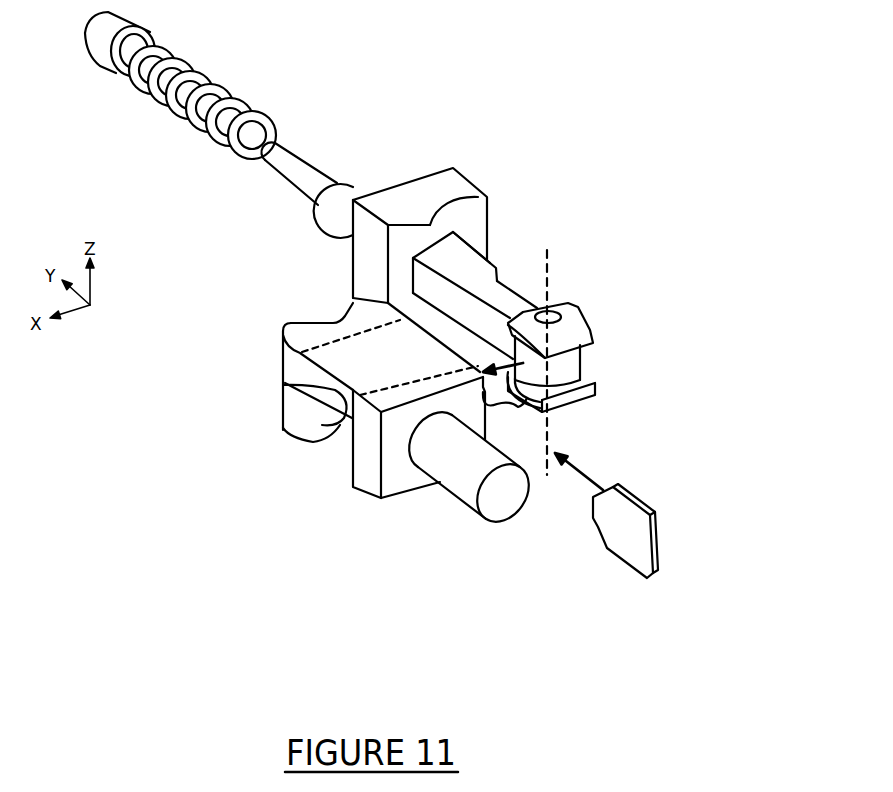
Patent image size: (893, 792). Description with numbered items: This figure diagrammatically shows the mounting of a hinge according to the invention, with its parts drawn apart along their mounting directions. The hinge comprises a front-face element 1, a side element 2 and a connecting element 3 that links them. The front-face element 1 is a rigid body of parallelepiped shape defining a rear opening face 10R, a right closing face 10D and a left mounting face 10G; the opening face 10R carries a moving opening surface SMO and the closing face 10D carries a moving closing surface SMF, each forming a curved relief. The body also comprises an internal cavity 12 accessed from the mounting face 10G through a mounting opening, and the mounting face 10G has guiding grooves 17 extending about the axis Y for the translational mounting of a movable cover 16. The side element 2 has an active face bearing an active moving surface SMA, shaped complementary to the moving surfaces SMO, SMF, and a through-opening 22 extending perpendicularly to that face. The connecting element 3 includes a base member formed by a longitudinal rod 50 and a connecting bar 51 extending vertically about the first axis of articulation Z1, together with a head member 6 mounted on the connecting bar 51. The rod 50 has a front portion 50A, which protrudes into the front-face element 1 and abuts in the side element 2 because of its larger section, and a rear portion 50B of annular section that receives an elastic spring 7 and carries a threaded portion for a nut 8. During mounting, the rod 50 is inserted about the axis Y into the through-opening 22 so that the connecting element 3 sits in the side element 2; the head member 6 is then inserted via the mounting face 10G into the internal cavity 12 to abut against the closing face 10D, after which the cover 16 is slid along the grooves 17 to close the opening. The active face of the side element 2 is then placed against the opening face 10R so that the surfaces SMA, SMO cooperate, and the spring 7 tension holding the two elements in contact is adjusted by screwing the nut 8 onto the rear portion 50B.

The front-face element 1 is at (410, 490).
The side element 2 is at (328, 253).
The connecting element 3 is at (668, 383).
The head member 6 is at (568, 306).
The elastic spring 7 is at (170, 100).
The nut 8 is at (97, 44).
The internal cavity 12 is at (372, 359).
The movable cover 16 is at (650, 552).
The guiding grooves 17 is at (512, 406).
The through-opening 22 is at (452, 235).
The longitudinal rod 50 is at (525, 275).
The front portion 50A is at (492, 265).
The rear portion 50B is at (306, 164).
The connecting bar 51 is at (593, 335).
The rear opening face 10R is at (283, 331).
The right closing face 10D is at (323, 420).
The left mounting face 10G is at (500, 430).
The active moving surface SMA is at (397, 242).
The moving opening surface SMO is at (348, 305).
The moving closing surface SMF is at (305, 386).
The first axis of articulation Z1 is at (549, 351).